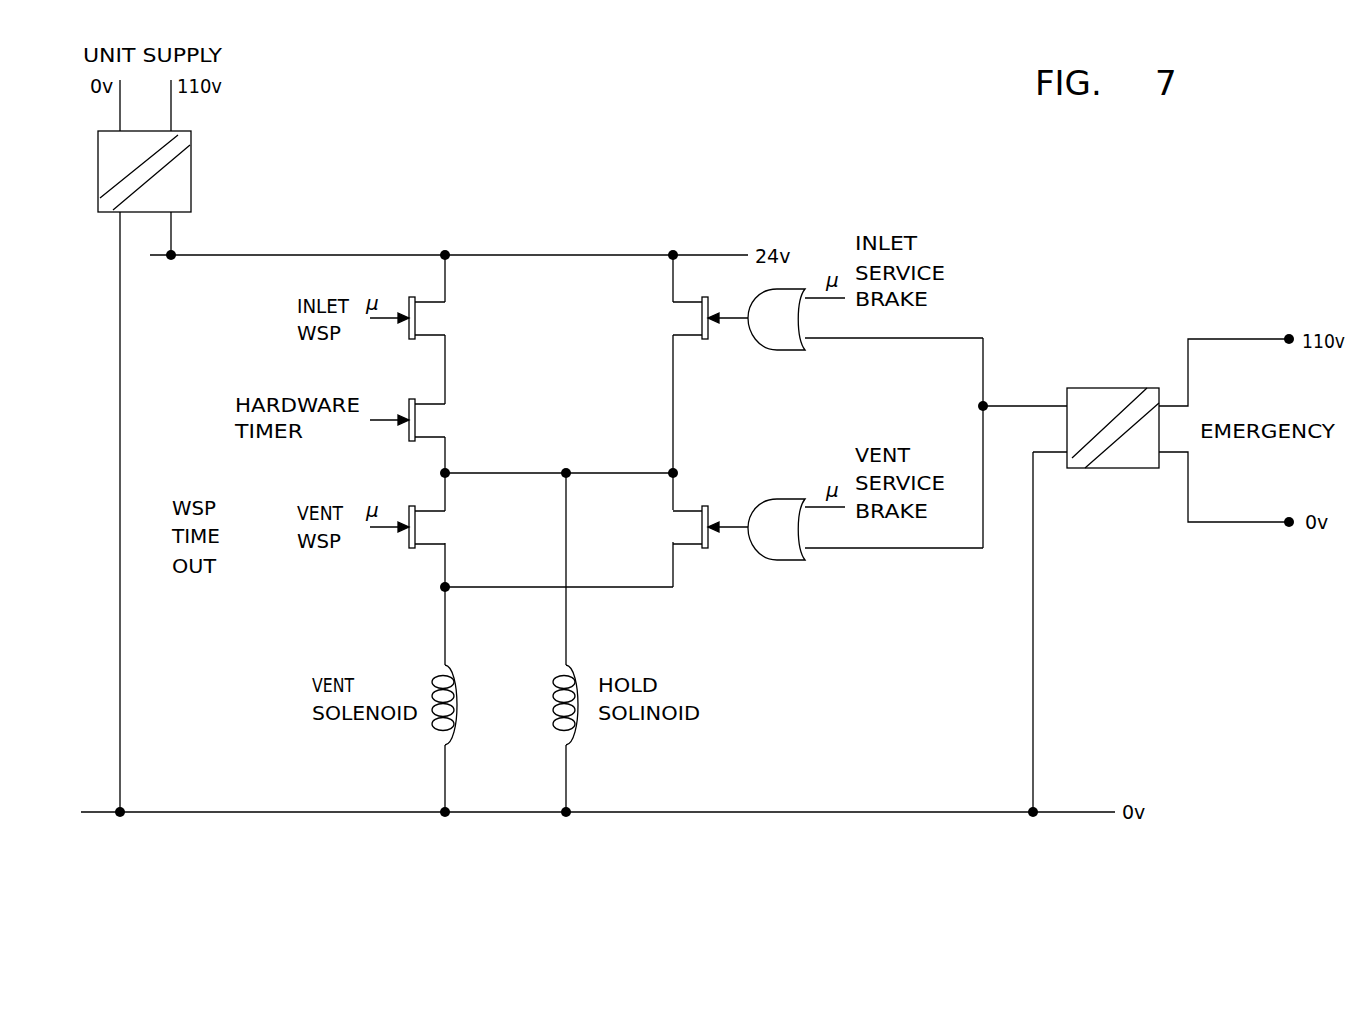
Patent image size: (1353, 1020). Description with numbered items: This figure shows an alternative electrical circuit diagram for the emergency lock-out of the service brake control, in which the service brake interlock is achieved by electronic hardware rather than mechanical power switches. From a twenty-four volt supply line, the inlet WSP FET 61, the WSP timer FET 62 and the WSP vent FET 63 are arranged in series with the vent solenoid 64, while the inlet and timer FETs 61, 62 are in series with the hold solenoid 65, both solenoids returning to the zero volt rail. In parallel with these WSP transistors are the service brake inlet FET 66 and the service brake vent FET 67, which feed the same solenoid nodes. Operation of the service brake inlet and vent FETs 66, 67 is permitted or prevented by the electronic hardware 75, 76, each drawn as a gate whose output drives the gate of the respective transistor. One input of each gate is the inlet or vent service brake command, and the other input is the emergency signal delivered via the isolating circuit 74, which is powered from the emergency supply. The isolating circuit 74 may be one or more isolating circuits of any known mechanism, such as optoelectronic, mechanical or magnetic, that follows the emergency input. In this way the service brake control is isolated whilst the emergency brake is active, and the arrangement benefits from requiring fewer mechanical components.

The inlet WSP FET 61 is at (443, 317).
The WSP timer FET 62 is at (443, 419).
The WSP vent FET 63 is at (443, 526).
The vent solenoid 64 is at (458, 703).
The hold solenoid 65 is at (550, 702).
The service brake inlet FET 66 is at (682, 319).
The service brake vent FET 67 is at (682, 528).
The isolating circuit 74 is at (1115, 468).
The electronic hardware 75 is at (780, 338).
The electronic hardware 76 is at (778, 548).